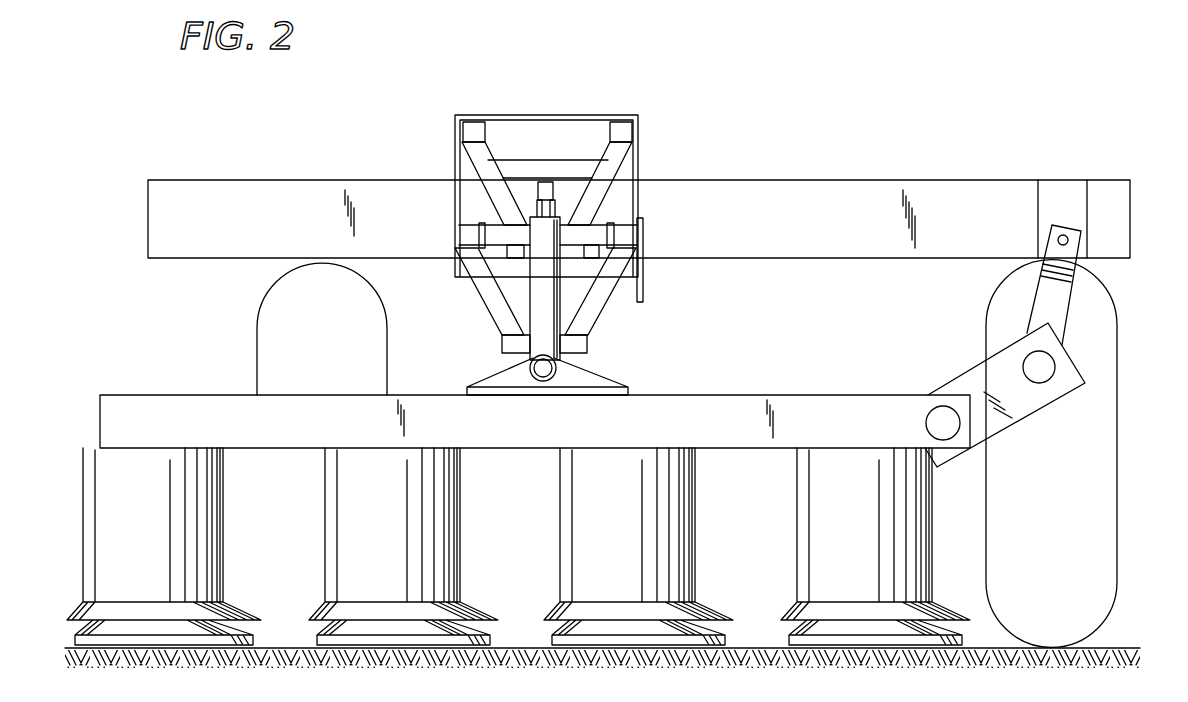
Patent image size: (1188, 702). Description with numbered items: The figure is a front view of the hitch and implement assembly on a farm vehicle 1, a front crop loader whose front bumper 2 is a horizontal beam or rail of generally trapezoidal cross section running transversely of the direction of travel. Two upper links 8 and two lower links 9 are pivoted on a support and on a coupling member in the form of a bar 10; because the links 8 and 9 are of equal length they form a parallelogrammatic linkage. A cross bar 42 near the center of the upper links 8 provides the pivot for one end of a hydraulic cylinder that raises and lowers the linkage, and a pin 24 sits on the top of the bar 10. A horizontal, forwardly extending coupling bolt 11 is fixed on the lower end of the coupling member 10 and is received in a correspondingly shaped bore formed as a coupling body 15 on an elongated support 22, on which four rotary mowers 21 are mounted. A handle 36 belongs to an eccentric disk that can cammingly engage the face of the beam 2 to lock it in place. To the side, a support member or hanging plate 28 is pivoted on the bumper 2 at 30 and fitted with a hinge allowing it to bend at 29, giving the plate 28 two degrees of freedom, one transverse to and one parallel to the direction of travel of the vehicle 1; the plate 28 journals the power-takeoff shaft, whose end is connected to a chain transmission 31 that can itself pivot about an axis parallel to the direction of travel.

The farm vehicle 1 is at (1100, 339).
The front bumper 2 is at (787, 193).
The upper links 8 is at (480, 152).
The lower links 9 is at (497, 305).
The coupling member bar 10 is at (546, 270).
The coupling bolt 11 is at (538, 375).
The coupling body 15 is at (590, 382).
The rotary mowers 21 is at (680, 523).
The elongated support 22 is at (883, 407).
The pin 24 is at (553, 192).
The hanging plate 28 is at (1043, 307).
The hinge 29 is at (1076, 272).
The pivot 30 is at (1058, 240).
The chain transmission 31 is at (1030, 404).
The handle 36 is at (643, 296).
The cross bar 42 is at (554, 140).